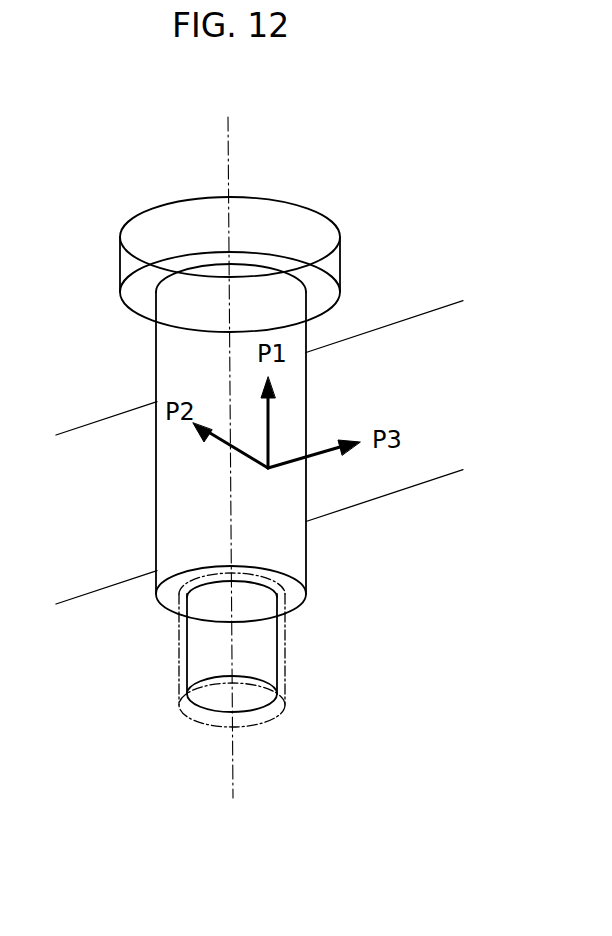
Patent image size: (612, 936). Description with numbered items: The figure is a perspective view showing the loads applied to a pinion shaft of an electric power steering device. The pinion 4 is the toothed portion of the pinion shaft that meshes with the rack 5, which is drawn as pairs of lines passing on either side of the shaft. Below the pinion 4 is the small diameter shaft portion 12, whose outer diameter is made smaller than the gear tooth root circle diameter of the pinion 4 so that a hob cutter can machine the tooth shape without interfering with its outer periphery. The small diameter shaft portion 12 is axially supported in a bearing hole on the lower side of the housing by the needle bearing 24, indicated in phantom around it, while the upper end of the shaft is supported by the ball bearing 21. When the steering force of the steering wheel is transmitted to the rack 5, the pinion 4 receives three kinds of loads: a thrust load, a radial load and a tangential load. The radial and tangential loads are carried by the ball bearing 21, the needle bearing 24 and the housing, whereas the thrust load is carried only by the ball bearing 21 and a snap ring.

The ball bearing 21 is at (132, 253).
The pinion 4 is at (158, 502).
The small diameter shaft portion 12 is at (198, 652).
The needle bearing 24 is at (287, 650).
The rack 5 is at (410, 332).